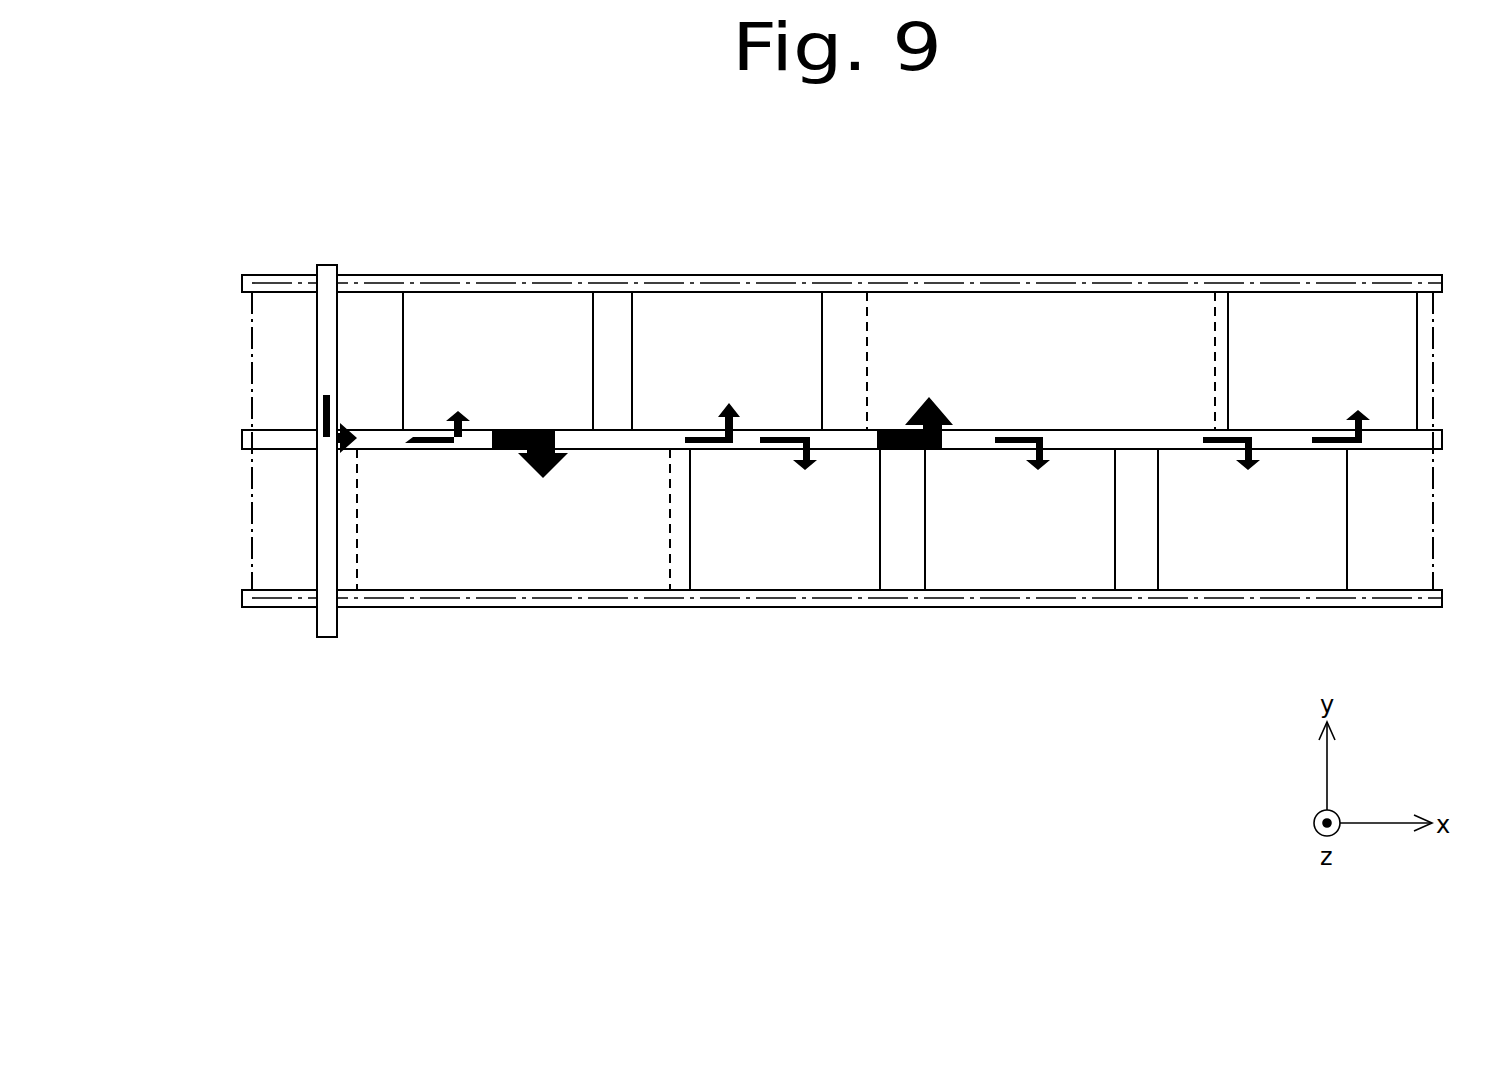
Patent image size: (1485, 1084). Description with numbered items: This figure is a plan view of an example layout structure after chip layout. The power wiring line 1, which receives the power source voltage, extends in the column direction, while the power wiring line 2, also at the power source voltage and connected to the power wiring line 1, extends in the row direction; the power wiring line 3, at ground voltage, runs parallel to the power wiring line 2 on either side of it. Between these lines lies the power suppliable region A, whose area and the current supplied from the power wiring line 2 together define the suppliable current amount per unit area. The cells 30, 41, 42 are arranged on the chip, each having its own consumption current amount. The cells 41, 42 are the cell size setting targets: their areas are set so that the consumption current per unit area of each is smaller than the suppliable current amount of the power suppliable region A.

The power wiring line 1 is at (330, 638).
The power wiring line 2 is at (247, 452).
The power wiring line 3 is at (248, 280).
The cell 30 is at (712, 300).
The cell 41 is at (1010, 300).
The cell 42 is at (500, 578).
The power suppliable region A is at (252, 381).